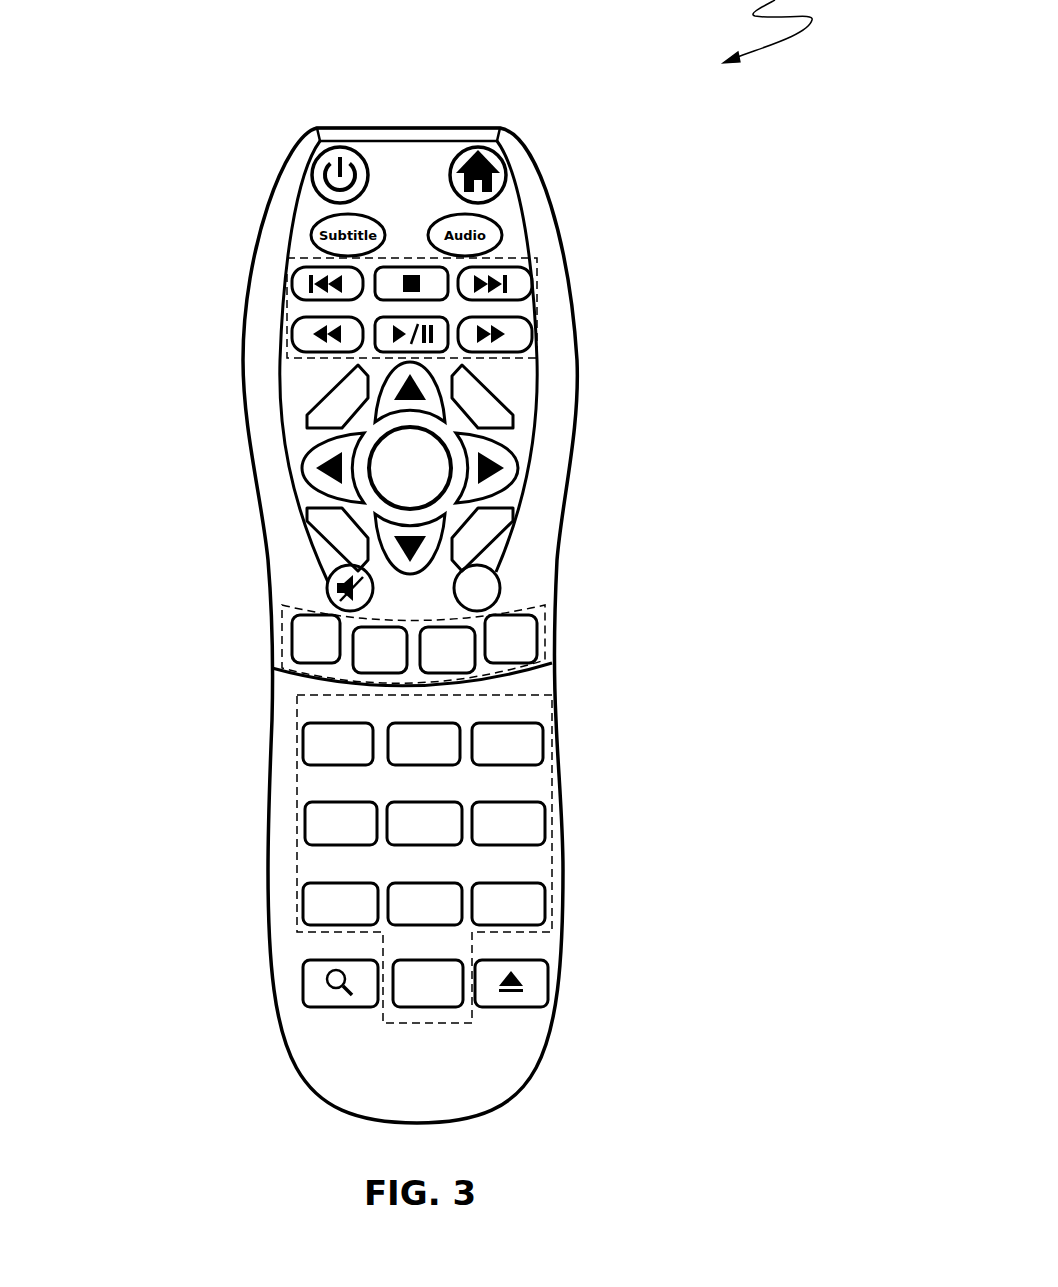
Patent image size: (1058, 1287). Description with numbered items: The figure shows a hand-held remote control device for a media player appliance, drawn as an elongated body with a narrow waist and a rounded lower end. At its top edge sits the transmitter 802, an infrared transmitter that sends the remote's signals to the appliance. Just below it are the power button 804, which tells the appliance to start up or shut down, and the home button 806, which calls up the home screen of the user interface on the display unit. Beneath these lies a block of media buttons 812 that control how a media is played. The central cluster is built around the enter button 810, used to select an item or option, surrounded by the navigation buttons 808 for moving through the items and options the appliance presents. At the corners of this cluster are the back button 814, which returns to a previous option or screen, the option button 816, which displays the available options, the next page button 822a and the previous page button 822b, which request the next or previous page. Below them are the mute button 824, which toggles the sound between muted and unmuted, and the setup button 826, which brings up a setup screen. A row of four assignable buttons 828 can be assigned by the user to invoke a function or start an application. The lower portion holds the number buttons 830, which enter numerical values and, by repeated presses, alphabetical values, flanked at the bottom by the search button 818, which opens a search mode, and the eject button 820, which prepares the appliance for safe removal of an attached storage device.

The transmitter 802 is at (413, 133).
The power button 804 is at (313, 163).
The home button 806 is at (508, 178).
The navigation buttons 808 is at (300, 473).
The enter button 810 is at (447, 483).
The media buttons 812 is at (537, 273).
The back button 814 is at (308, 413).
The option button 816 is at (497, 395).
The search button 818 is at (305, 980).
The eject button 820 is at (548, 980).
The next page button 822a is at (313, 528).
The previous page button 822b is at (503, 530).
The mute button 824 is at (327, 593).
The setup button 826 is at (500, 590).
The assignable buttons 828 is at (546, 639).
The number buttons 830 is at (552, 771).